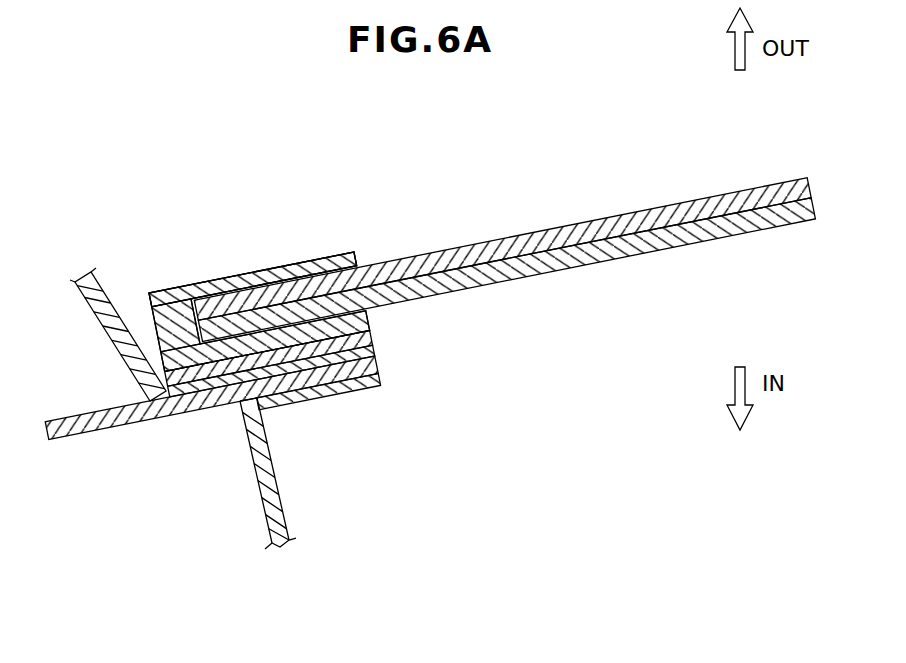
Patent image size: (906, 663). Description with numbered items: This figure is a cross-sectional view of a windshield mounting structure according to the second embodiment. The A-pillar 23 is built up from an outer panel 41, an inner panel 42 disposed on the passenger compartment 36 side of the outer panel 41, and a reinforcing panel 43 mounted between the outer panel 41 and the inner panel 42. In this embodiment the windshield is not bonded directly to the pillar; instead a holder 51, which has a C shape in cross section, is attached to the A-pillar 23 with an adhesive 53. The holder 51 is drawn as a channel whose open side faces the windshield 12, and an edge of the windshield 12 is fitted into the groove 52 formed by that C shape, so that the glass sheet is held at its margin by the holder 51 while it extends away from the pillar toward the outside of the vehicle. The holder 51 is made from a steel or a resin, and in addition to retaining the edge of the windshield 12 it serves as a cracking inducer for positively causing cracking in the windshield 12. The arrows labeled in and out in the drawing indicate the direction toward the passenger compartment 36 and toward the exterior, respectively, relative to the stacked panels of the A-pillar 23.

The windshield 12 is at (553, 229).
The A-pillar 23 is at (270, 455).
The passenger compartment 36 is at (547, 398).
The outer panel 41 is at (97, 284).
The inner panel 42 is at (347, 393).
The reinforcing panel 43 is at (131, 427).
The holder 51 is at (243, 274).
The groove 52 is at (366, 266).
The adhesive 53 is at (374, 336).